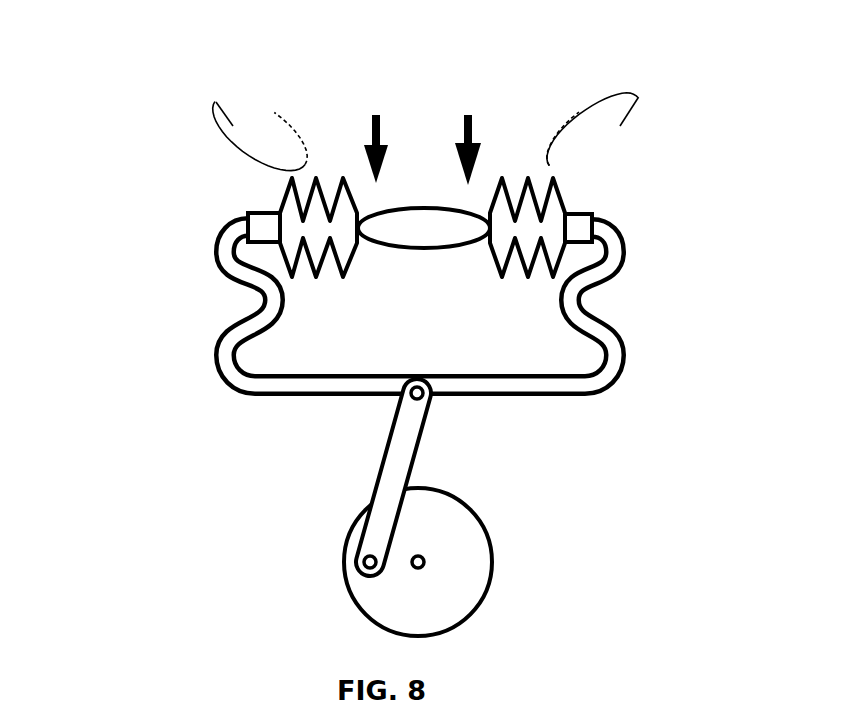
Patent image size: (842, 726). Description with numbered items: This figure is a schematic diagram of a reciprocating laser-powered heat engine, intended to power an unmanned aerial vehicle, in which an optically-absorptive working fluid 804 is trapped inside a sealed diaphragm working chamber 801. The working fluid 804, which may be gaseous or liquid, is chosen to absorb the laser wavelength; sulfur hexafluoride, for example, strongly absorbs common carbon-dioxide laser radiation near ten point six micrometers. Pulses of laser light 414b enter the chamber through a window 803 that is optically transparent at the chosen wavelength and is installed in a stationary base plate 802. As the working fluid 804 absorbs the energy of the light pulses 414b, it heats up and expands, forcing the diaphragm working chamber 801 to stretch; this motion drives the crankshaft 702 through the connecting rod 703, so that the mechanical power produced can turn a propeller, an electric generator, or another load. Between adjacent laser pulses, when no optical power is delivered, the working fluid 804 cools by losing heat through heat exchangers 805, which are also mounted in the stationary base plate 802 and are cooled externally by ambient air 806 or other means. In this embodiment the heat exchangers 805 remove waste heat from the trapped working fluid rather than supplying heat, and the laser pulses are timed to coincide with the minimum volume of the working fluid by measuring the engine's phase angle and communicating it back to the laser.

The diaphragm working chamber 801 is at (227, 347).
The stationary base plate 802 is at (264, 228).
The window 803 is at (460, 212).
The working fluid 804 is at (507, 308).
The heat exchangers 805 is at (553, 230).
The ambient air 806 is at (575, 117).
The pulses of laser light 414b is at (458, 152).
The crankshaft 702 is at (458, 580).
The connecting rod 703 is at (402, 443).